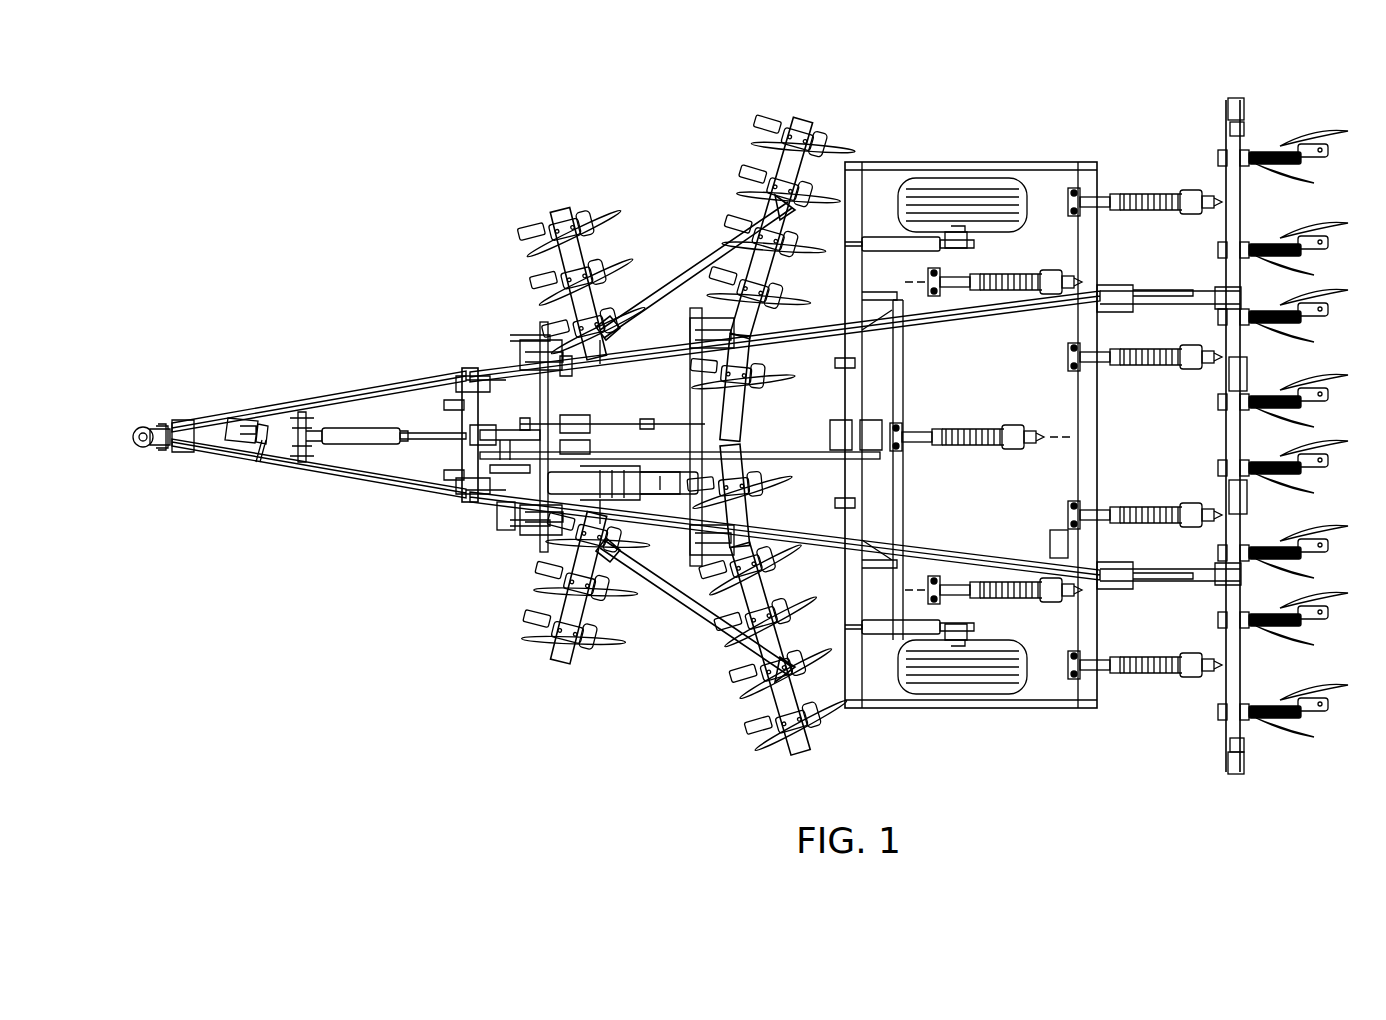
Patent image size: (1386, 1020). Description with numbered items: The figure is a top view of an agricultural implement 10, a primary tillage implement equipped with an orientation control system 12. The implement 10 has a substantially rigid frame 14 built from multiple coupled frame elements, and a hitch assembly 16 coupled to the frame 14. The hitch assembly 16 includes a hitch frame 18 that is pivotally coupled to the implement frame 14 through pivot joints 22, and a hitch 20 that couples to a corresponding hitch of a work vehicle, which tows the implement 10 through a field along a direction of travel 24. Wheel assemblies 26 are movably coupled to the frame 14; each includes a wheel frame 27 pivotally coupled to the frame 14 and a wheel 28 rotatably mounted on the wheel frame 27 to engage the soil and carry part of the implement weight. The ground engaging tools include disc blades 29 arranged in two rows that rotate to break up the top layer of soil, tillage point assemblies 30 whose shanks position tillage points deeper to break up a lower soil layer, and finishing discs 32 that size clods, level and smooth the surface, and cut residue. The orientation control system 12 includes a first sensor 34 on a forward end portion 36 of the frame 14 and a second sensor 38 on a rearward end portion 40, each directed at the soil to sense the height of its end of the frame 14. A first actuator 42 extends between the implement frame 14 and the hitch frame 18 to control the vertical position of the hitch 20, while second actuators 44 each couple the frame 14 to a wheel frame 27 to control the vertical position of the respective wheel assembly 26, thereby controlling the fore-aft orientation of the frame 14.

The agricultural implement 10 is at (430, 235).
The orientation control system 12 is at (402, 326).
The frame 14 is at (646, 516).
The hitch assembly 16 is at (264, 393).
The hitch frame 18 is at (290, 406).
The hitch 20 is at (139, 427).
The pivot joint 22 is at (478, 363).
The direction of travel 24 is at (178, 283).
The wheel assembly 26 is at (920, 150).
The wheel frame 27 is at (962, 236).
The wheel 28 is at (931, 205).
The disc blade 29 is at (510, 643).
The tillage point assembly 30 is at (1060, 195).
The finishing disc 32 is at (1281, 743).
The first sensor 34 is at (503, 532).
The forward end portion 36 is at (442, 520).
The second sensor 38 is at (1050, 543).
The rearward end portion 40 is at (1098, 156).
The first actuator 42 is at (355, 428).
The second actuator 44 is at (895, 238).